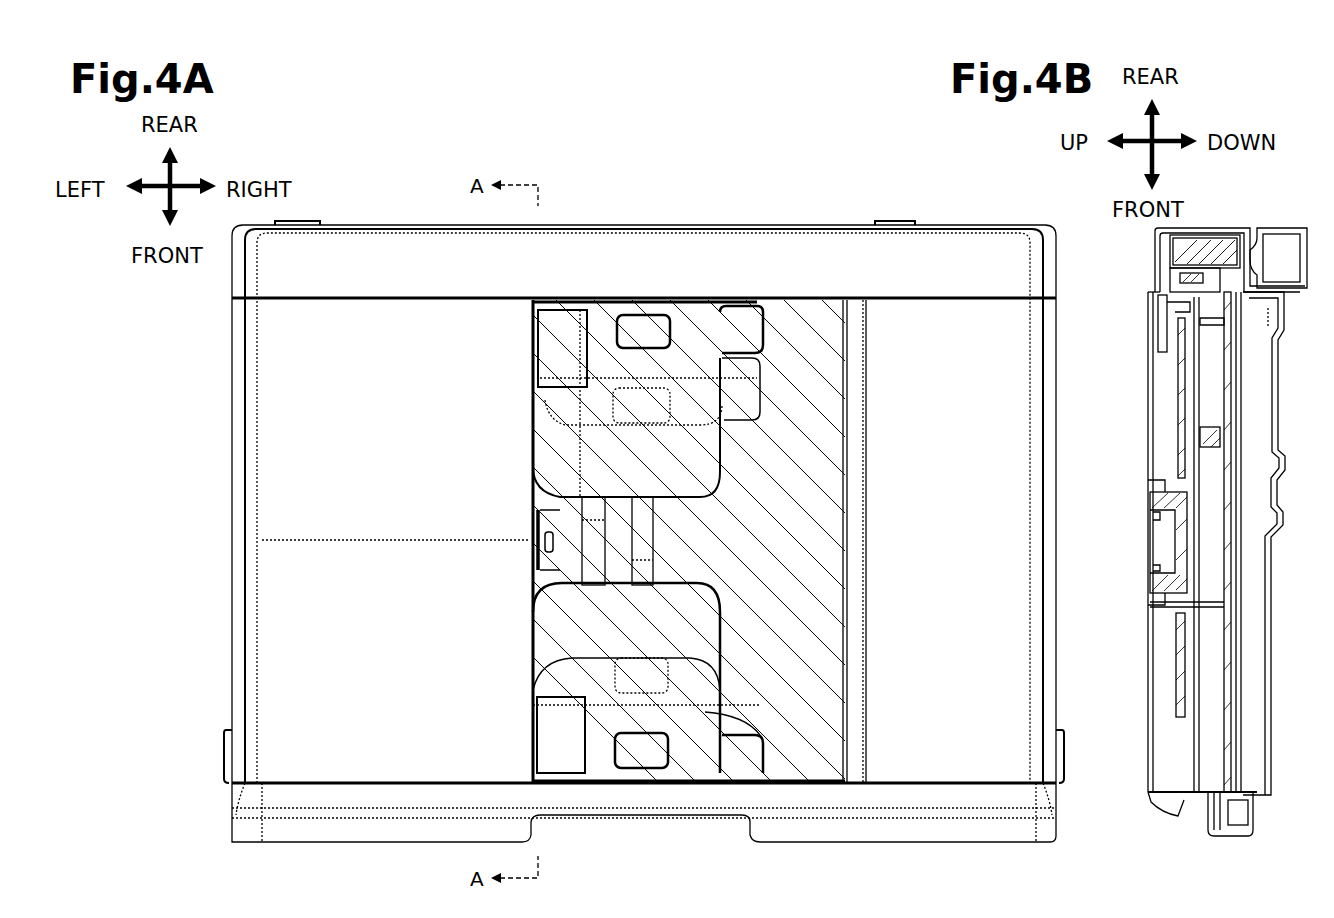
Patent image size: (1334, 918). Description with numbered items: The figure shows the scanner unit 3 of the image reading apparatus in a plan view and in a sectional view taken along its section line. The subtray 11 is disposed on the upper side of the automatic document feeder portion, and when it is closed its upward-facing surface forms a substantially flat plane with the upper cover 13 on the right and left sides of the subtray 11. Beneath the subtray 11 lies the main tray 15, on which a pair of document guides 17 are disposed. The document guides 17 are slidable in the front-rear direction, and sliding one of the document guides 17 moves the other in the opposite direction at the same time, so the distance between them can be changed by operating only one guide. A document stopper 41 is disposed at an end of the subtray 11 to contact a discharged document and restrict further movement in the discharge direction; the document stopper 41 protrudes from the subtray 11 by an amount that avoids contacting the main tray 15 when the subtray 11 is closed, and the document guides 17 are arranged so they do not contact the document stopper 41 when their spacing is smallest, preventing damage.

In FIG. 4A, the scanner unit 3 is at (981, 210).
In FIG. 4B, the scanner unit 3 is at (1274, 210).
In FIG. 4A, the subtray 11 is at (830, 478).
In FIG. 4B, the subtray 11 is at (1148, 460).
In FIG. 4A, the upper cover 13 is at (995, 712).
In FIG. 4B, the main tray 15 is at (1182, 606).
In FIG. 4A, the document guides 17 is at (793, 457).
In FIG. 4B, the document guides 17 is at (1177, 412).
In FIG. 4A, the document stopper 41 is at (532, 524).
In FIG. 4B, the document stopper 41 is at (1178, 552).